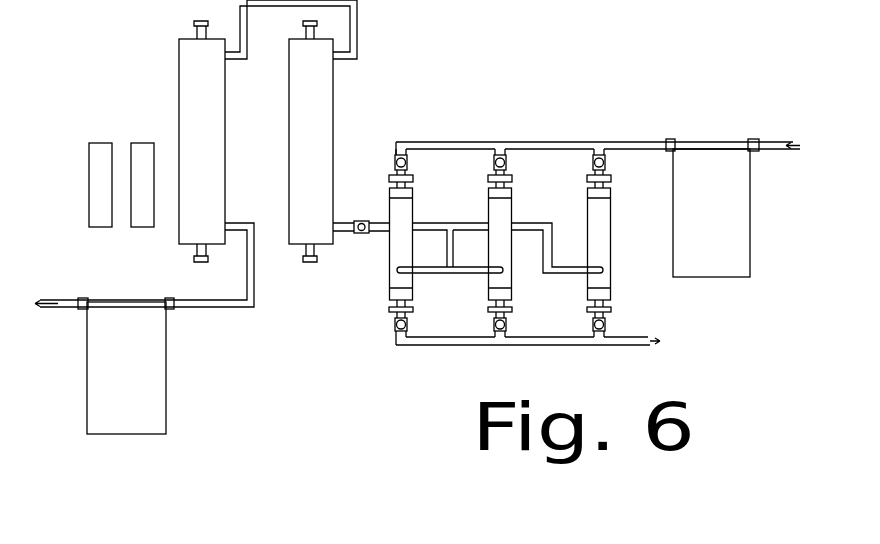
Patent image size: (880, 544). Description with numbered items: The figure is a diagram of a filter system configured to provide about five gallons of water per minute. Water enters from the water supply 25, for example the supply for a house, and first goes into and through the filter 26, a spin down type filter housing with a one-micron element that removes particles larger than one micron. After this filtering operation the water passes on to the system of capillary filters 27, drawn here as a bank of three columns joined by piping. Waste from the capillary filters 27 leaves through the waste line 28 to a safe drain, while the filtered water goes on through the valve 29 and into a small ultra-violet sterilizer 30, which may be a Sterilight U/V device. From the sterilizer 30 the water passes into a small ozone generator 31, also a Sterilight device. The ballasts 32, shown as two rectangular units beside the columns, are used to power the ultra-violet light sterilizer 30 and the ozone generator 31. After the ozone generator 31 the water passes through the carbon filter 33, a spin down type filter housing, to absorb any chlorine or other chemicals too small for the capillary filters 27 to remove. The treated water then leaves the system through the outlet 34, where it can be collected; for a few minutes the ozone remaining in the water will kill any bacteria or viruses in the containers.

The water supply 25 is at (773, 142).
The filter 26 is at (711, 213).
The reactor columns 27 is at (500, 243).
The waste line 28 is at (458, 340).
The valve 29 is at (360, 221).
The ultra-violet sterilizer 30 is at (321, 141).
The ozone generator 31 is at (198, 154).
The ballasts 32 is at (102, 196).
The carbon filter 33 is at (126, 368).
The outlet line 34 is at (52, 301).